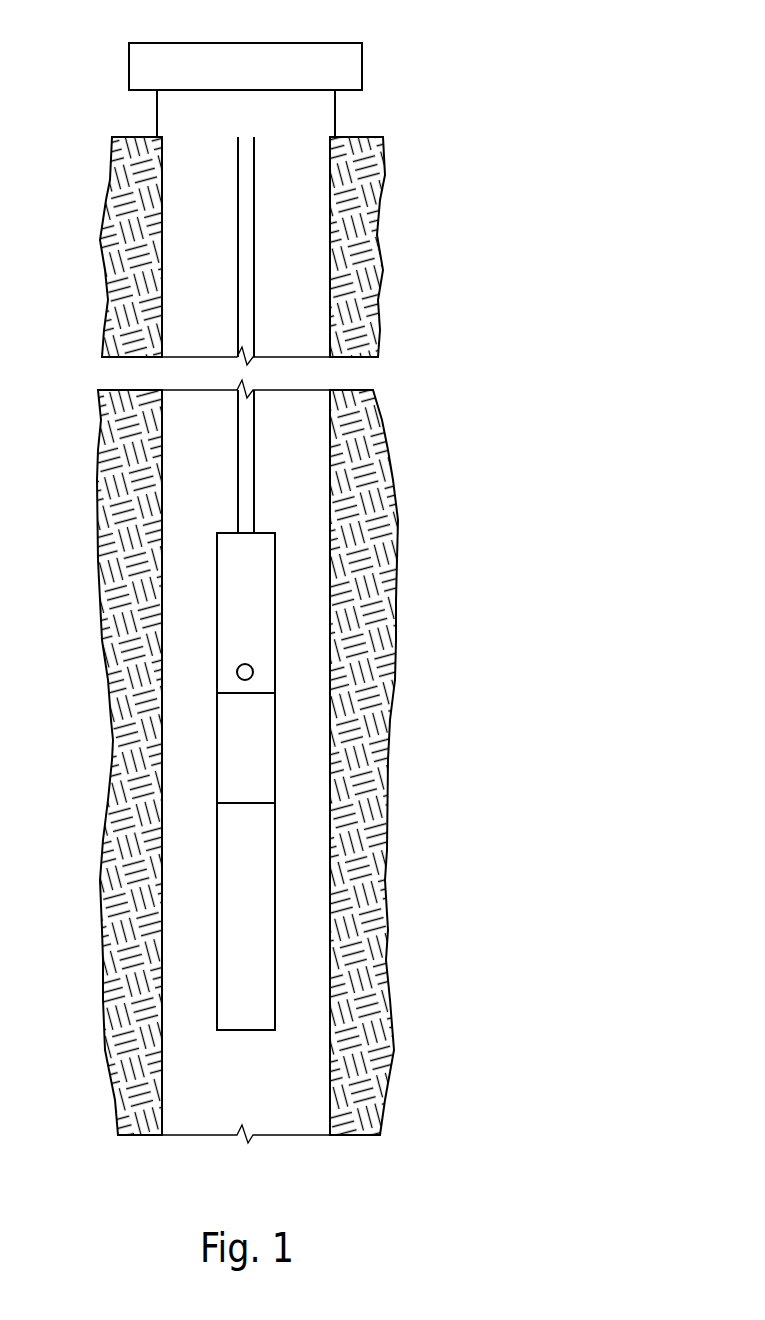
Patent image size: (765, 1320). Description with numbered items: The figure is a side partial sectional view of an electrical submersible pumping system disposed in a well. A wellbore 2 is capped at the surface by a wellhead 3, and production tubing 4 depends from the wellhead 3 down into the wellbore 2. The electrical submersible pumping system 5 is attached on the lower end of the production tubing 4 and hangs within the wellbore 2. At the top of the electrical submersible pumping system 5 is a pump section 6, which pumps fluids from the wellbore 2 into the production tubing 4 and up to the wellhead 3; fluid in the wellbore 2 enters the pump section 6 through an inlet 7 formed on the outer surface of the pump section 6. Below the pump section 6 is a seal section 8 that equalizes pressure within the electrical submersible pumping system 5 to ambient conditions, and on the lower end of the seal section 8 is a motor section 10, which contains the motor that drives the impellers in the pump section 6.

The wellbore 2 is at (345, 323).
The wellhead 3 is at (380, 70).
The production tubing 4 is at (257, 492).
The electrical submersible pumping system 5 is at (421, 851).
The pump section 6 is at (215, 562).
The inlet 7 is at (238, 666).
The seal section 8 is at (275, 740).
The motor section 10 is at (213, 910).